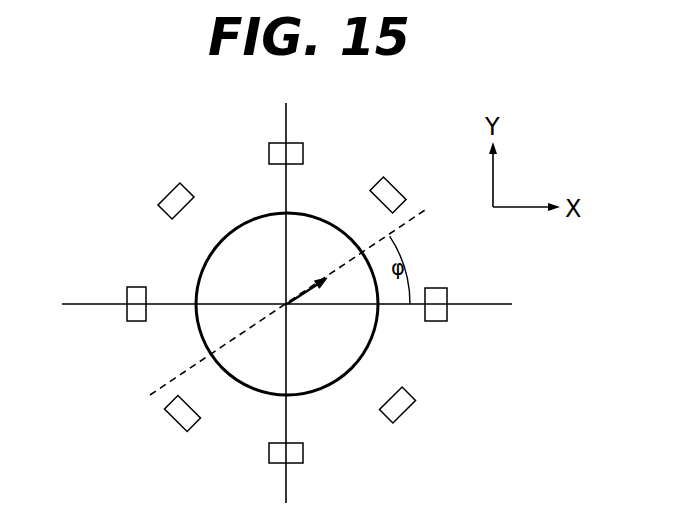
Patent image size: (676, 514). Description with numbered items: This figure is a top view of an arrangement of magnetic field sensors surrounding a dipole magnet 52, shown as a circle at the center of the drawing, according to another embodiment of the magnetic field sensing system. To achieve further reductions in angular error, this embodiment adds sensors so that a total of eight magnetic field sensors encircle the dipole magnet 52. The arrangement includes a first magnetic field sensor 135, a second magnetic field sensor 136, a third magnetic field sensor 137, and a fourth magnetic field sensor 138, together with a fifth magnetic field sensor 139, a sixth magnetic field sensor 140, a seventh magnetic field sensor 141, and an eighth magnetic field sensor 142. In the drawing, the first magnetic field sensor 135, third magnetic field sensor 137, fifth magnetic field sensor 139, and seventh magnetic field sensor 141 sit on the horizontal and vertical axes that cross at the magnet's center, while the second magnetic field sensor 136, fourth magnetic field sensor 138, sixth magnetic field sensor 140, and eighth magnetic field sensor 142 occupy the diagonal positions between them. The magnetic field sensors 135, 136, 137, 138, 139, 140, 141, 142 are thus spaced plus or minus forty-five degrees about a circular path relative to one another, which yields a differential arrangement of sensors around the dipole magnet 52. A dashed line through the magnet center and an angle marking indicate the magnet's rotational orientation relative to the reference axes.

The dipole magnet 52 is at (215, 265).
The first magnetic field sensor 135 is at (438, 310).
The second magnetic field sensor 136 is at (383, 182).
The third magnetic field sensor 137 is at (293, 156).
The fourth magnetic field sensor 138 is at (167, 209).
The fifth magnetic field sensor 139 is at (132, 313).
The sixth magnetic field sensor 140 is at (182, 413).
The seventh magnetic field sensor 141 is at (295, 450).
The eighth magnetic field sensor 142 is at (395, 405).